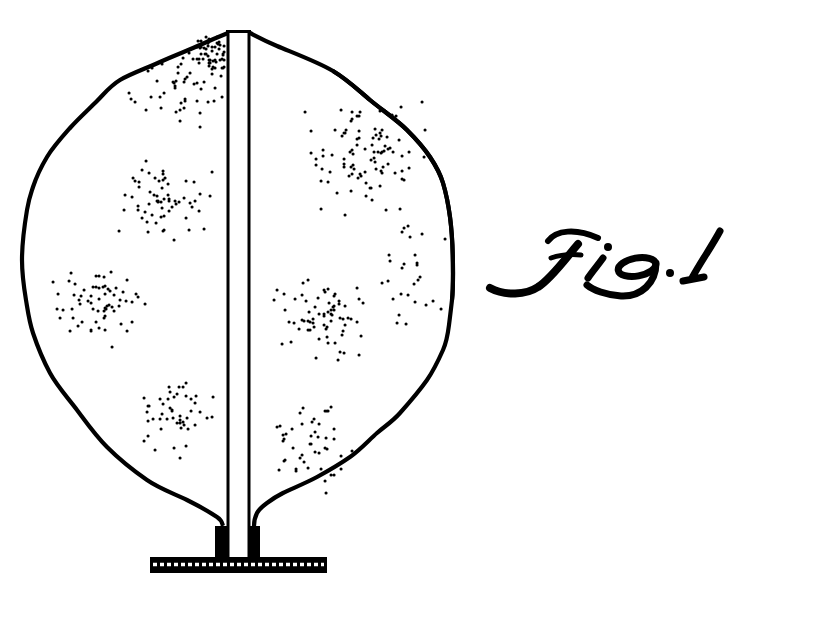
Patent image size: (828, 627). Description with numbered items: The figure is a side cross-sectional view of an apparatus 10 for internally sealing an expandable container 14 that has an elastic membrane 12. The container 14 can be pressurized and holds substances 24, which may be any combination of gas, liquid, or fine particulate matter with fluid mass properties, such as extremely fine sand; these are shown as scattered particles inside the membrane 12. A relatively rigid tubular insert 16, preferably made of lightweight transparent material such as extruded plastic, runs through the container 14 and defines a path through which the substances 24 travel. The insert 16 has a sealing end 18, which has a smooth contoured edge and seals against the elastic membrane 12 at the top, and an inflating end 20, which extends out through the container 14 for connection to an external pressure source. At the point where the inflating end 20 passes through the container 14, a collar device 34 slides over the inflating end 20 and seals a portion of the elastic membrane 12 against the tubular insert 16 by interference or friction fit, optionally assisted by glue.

The apparatus 10 is at (427, 61).
The elastic membrane 12 is at (118, 80).
The expandable container 14 is at (393, 147).
The tubular insert 16 is at (240, 210).
The sealing end 18 is at (237, 37).
The inflating end 20 is at (235, 552).
The substances 24 is at (153, 210).
The collar device 34 is at (217, 542).